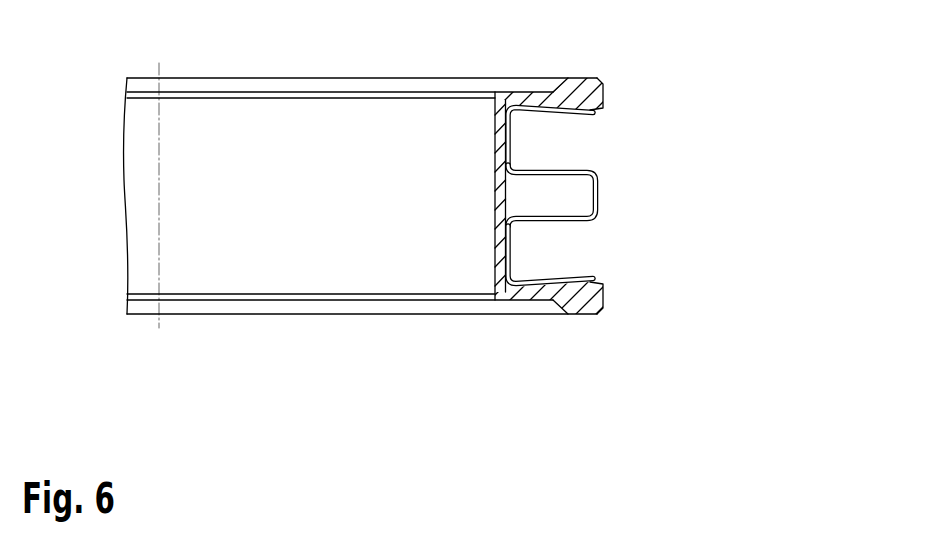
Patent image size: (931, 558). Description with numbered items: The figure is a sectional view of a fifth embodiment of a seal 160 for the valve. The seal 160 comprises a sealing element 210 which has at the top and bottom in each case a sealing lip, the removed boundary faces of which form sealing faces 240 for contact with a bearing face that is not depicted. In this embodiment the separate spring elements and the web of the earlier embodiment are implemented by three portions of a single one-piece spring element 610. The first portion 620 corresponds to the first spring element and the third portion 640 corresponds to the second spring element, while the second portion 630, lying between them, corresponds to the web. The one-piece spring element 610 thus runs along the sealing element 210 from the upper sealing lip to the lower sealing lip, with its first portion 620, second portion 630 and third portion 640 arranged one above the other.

The seal 160 is at (714, 53).
The sealing element 210 is at (586, 86).
The sealing face 240 is at (577, 77).
The one-piece spring element 610 is at (584, 168).
The first portion 620 is at (610, 139).
The second portion 630 is at (610, 195).
The third portion 640 is at (610, 253).